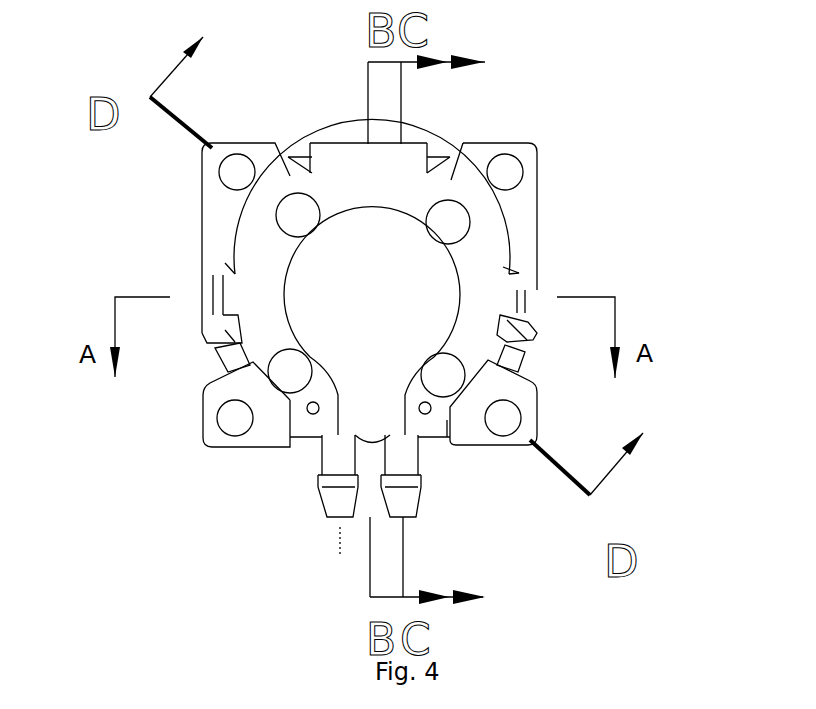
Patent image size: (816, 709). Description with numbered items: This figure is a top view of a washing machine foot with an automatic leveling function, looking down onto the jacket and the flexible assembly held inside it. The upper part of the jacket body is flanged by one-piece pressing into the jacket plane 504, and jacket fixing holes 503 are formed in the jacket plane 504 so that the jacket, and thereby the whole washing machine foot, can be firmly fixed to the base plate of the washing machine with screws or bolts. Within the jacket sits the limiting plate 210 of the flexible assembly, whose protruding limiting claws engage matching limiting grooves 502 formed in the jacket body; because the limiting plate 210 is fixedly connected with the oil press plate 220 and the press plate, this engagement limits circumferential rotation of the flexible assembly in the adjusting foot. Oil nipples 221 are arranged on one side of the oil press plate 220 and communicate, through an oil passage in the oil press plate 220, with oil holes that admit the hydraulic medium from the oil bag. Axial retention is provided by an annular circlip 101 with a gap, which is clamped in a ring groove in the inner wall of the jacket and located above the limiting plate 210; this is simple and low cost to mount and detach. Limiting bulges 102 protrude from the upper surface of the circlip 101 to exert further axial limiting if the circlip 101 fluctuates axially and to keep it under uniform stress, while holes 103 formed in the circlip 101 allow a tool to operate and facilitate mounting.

The limiting plate 210 is at (367, 247).
The jacket fixing hole 503 is at (507, 170).
The jacket plane 504 is at (515, 235).
The limiting groove 502 is at (520, 320).
The oil nipple 221 is at (520, 365).
The limiting bulge 102 is at (268, 378).
The circlip 101 is at (288, 405).
The hole 103 is at (306, 412).
The oil press plate 220 is at (447, 437).